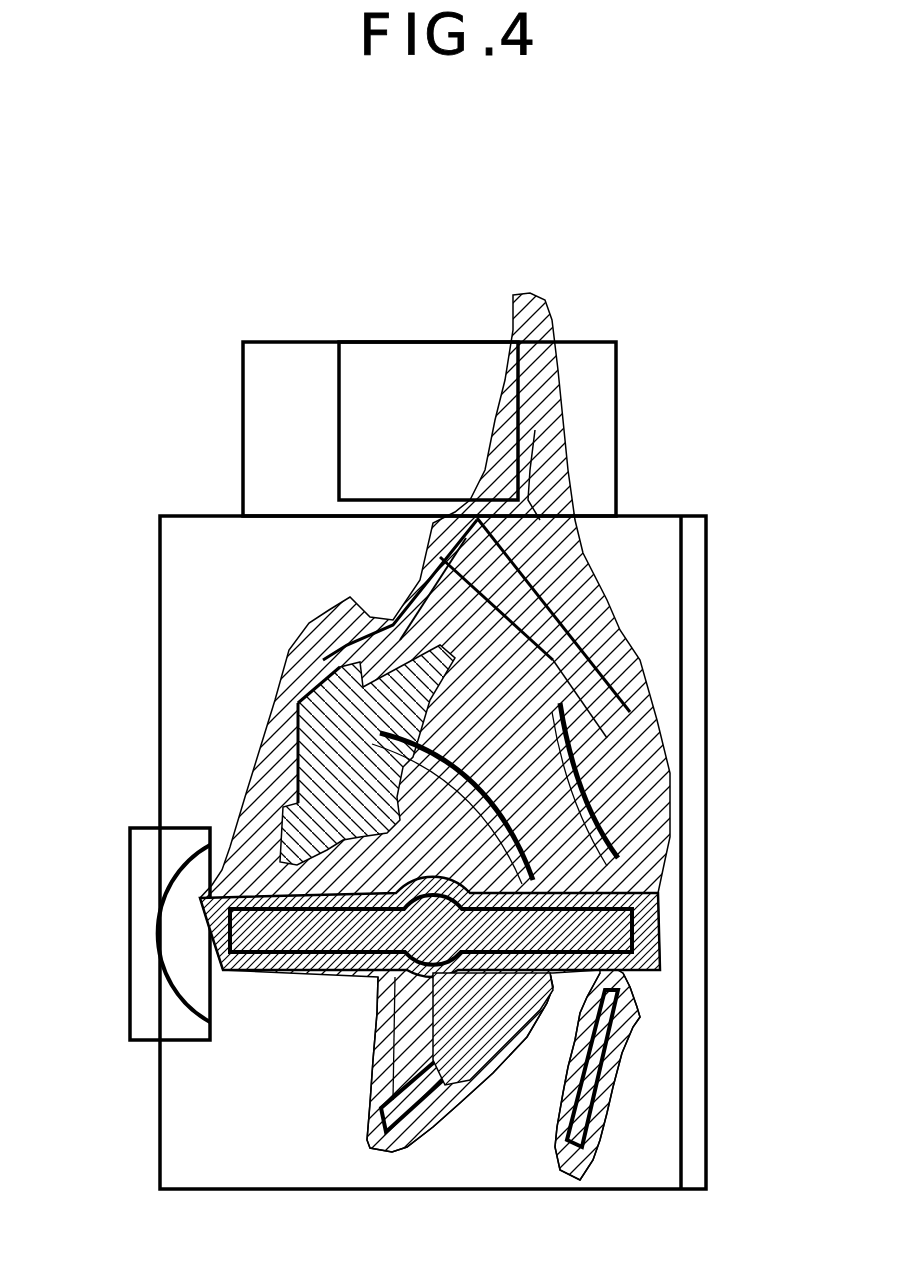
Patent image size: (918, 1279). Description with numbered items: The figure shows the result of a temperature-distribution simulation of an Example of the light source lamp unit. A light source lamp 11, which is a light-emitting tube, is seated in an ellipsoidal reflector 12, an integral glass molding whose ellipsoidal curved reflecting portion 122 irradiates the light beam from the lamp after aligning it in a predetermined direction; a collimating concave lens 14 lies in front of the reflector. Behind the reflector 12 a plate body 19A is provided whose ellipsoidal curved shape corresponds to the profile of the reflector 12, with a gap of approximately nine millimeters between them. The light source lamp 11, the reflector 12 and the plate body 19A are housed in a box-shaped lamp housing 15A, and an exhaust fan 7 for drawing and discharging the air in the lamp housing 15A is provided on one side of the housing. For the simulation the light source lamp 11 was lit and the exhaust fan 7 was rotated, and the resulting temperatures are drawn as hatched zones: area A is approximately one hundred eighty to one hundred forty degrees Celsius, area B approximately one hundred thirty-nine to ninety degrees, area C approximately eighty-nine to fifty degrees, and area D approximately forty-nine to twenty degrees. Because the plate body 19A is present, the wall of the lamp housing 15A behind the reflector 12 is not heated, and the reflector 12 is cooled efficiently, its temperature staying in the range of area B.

The exhaust fan 7 is at (612, 402).
The lamp housing 15A is at (650, 518).
The collimating concave lens 14 is at (130, 935).
The light source lamp 11 is at (430, 971).
The area A is at (270, 968).
The area B is at (548, 665).
The area C is at (548, 600).
The area D is at (577, 548).
The ellipsoidal reflector 12 is at (460, 1081).
The reflecting portion 122 is at (515, 1060).
The plate body 19A is at (617, 1090).